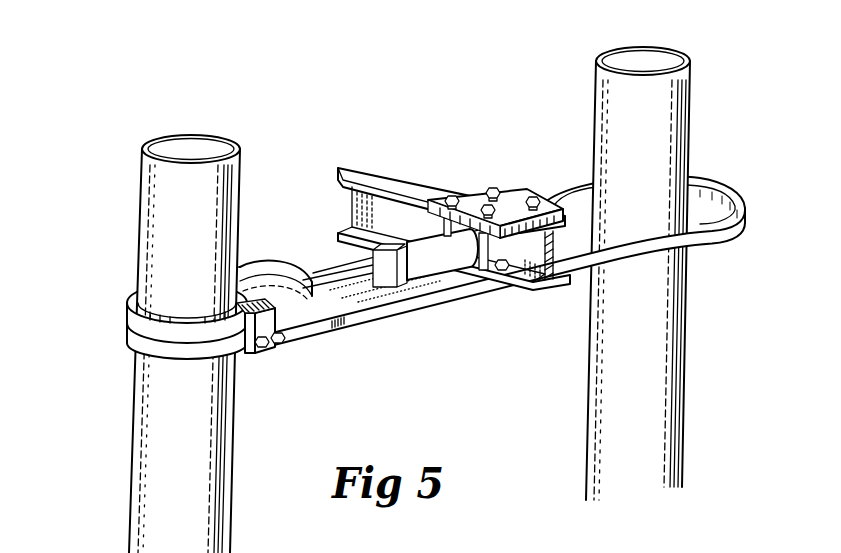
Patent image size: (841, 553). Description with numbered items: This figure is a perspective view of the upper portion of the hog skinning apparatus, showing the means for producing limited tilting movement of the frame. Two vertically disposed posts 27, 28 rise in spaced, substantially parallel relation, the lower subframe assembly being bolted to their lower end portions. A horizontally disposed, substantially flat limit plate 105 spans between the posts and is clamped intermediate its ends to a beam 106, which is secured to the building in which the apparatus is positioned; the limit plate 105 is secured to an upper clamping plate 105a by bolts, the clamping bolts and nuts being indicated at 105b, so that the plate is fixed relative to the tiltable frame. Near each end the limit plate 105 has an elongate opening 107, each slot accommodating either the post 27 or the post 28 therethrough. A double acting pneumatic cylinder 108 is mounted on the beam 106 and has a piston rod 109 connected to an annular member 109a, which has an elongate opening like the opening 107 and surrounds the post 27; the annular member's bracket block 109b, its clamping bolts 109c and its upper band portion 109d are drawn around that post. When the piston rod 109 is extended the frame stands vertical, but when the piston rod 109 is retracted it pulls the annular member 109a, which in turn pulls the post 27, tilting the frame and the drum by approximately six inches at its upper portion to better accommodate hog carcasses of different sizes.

The post 27 is at (142, 148).
The post 28 is at (692, 78).
The limit plate 105 is at (384, 312).
The upper clamping plate 105a is at (528, 181).
The clamp plate nuts 105b is at (491, 189).
The beam 106 is at (371, 168).
The elongate opening 107 is at (272, 250).
The double acting pneumatic cylinder 108 is at (433, 277).
The piston rod 109 is at (337, 270).
The annular member 109a is at (132, 323).
The clamp bracket block 109b is at (277, 320).
The clamp bolts 109c is at (278, 345).
The upper clamp band 109d is at (143, 303).